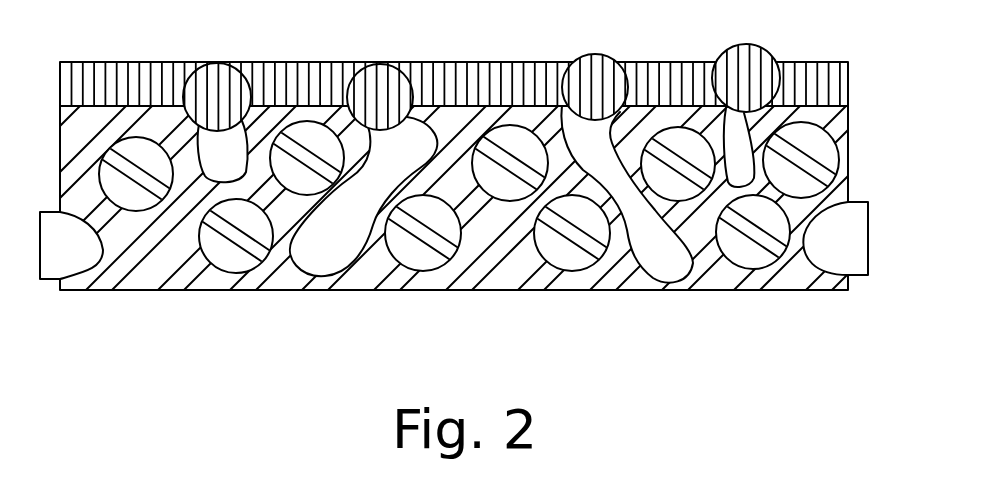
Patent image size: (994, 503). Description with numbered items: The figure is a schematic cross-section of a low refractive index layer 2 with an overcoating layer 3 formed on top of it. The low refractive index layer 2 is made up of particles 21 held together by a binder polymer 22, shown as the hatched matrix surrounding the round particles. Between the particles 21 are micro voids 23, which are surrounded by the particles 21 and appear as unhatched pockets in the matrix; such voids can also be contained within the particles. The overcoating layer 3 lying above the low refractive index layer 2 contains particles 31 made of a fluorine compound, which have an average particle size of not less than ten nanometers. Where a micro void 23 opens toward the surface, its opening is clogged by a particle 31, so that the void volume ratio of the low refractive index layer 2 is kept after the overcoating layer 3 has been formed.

The low refractive index layer 2 is at (470, 227).
The particles 21 is at (752, 242).
The binder polymer 22 is at (490, 263).
The micro voids 23 is at (655, 248).
The overcoating layer 3 is at (476, 67).
The particles made of a fluorine compound 31 is at (742, 80).